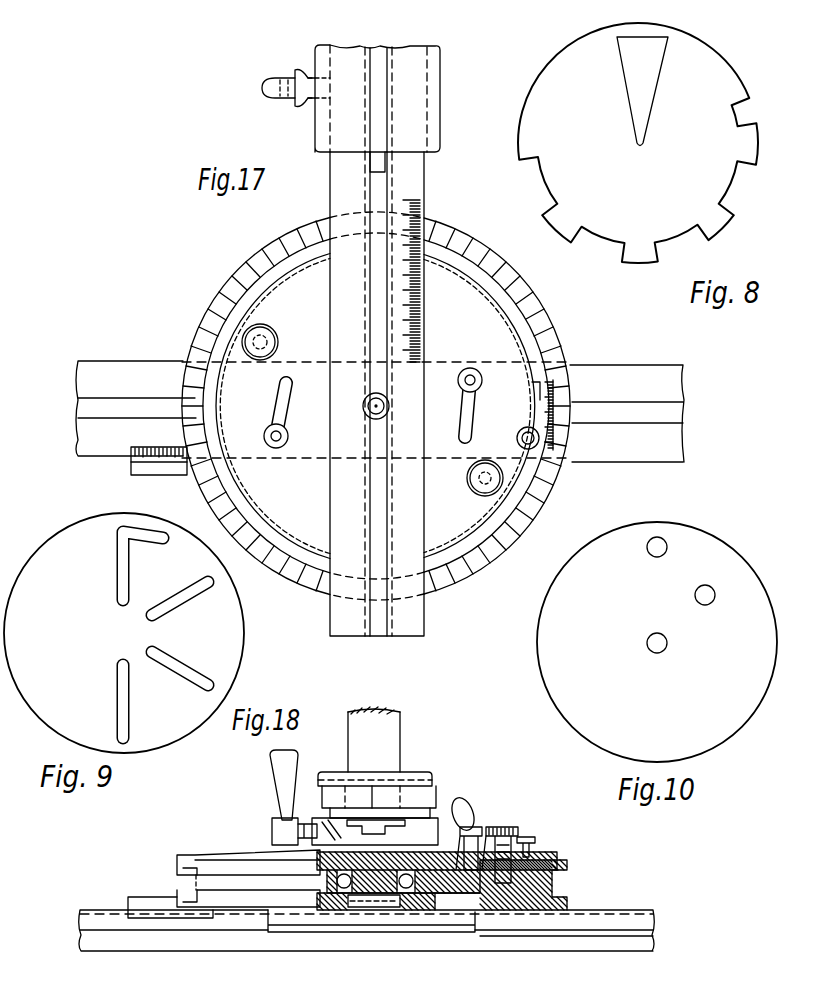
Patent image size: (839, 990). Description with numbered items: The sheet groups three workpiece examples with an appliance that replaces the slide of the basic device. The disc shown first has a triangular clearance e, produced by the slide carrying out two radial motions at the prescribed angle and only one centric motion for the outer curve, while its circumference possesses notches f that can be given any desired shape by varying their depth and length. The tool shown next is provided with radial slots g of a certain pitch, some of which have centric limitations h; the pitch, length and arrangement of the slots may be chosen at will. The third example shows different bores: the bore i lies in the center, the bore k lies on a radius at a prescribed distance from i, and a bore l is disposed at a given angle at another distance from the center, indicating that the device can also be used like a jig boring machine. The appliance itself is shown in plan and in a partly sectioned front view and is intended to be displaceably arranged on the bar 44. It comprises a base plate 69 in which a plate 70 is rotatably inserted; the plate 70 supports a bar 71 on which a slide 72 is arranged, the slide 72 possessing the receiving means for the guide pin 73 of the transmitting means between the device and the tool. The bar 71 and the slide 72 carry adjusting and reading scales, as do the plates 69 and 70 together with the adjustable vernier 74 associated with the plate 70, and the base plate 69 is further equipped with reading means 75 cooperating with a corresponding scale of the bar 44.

In FIG. 17, the bar 44 is at (108, 456).
In FIG. 17, the base plate 69 is at (490, 563).
In FIG. 18, the base plate 69 is at (557, 860).
In FIG. 17, the plate 70 is at (477, 510).
In FIG. 18, the plate 70 is at (440, 852).
In FIG. 17, the bar 71 is at (422, 623).
In FIG. 18, the bar 71 is at (405, 822).
In FIG. 17, the slide 72 is at (437, 127).
In FIG. 18, the slide 72 is at (423, 775).
In FIG. 18, the guide pin 73 is at (400, 732).
In FIG. 17, the adjustable vernier 74 is at (548, 390).
In FIG. 17, the reading means 75 is at (160, 463).
In FIG. 8, the triangular clearance e is at (657, 72).
In FIG. 8, the notches f is at (736, 183).
In FIG. 9, the radial slots g is at (197, 588).
In FIG. 9, the centric limitations h is at (160, 540).
In FIG. 10, the bore i is at (667, 643).
In FIG. 10, the bore k is at (667, 543).
In FIG. 10, the bore l is at (715, 592).